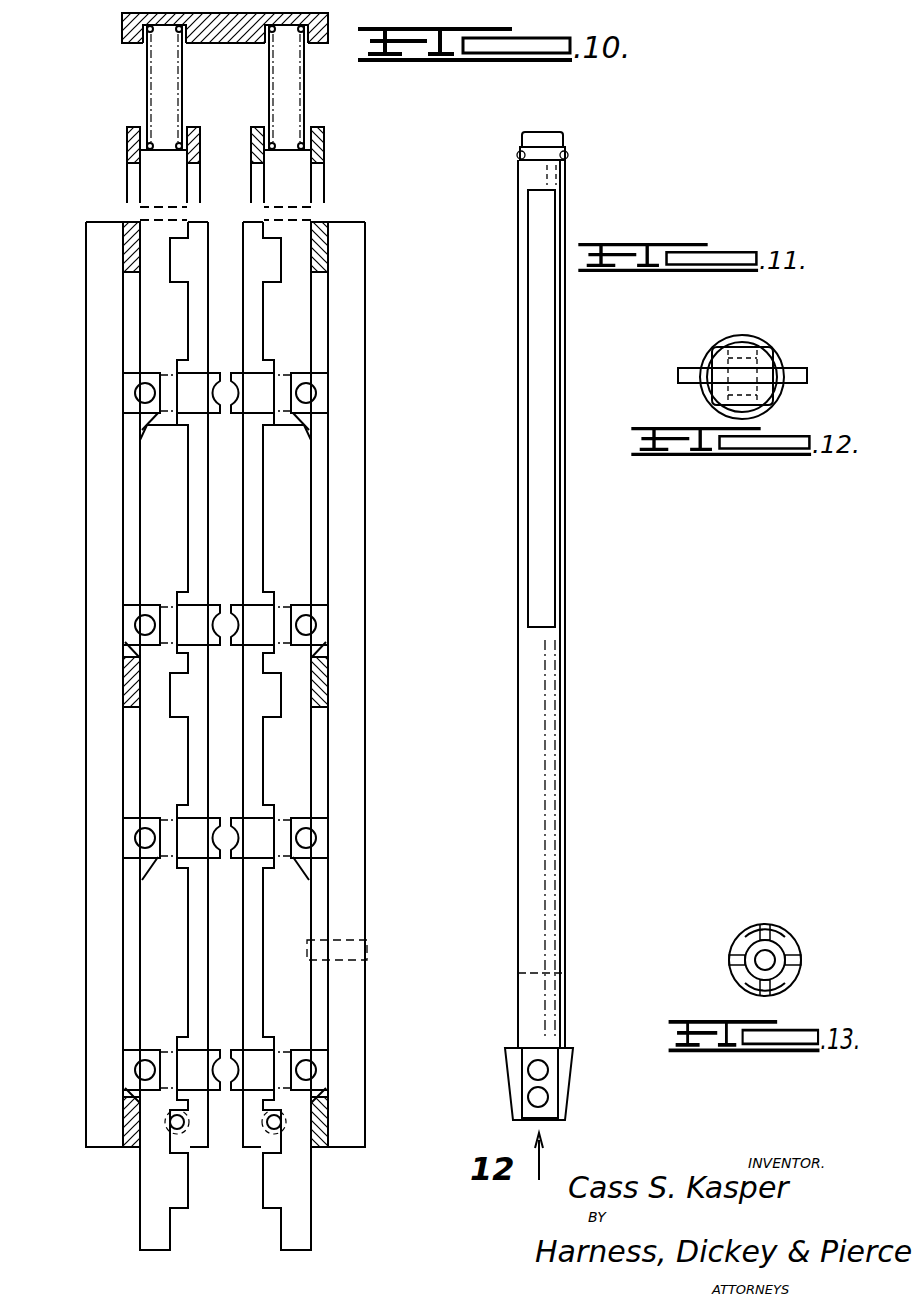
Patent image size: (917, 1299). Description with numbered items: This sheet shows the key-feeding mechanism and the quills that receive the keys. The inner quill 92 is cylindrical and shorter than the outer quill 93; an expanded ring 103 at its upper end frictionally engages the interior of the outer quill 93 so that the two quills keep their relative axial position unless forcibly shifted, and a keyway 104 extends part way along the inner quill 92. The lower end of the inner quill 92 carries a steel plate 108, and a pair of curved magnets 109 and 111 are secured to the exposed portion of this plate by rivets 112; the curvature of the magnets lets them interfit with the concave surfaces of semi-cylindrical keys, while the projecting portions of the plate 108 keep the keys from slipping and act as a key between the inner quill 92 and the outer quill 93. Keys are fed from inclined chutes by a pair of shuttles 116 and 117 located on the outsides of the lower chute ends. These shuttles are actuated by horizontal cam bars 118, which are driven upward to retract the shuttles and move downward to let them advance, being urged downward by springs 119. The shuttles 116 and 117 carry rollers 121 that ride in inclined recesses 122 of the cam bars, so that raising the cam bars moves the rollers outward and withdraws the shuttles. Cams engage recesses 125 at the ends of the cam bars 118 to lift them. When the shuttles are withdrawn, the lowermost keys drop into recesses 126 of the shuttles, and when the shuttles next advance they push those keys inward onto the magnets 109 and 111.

In FIG. 11, the inner quill 92 is at (555, 815).
In FIG. 13, the outer quill 93 is at (800, 948).
In FIG. 11, the expanded ring 103 is at (520, 153).
In FIG. 11, the keyway 104 is at (552, 568).
In FIG. 11, the steel plate 108 is at (565, 1062).
In FIG. 12, the steel plate 108 is at (808, 374).
In FIG. 11, the magnet 109 is at (530, 1083).
In FIG. 12, the magnet 109 is at (762, 358).
In FIG. 12, the magnet 111 is at (777, 403).
In FIG. 11, the rivets 112 is at (545, 1073).
In FIG. 12, the rivets 112 is at (768, 335).
In FIG. 10, the shuttle 116 is at (190, 383).
In FIG. 10, the shuttle 117 is at (262, 380).
In FIG. 10, the cam bars 118 is at (150, 490).
In FIG. 10, the springs 119 is at (302, 146).
In FIG. 10, the rollers 121 is at (318, 836).
In FIG. 10, the recesses 122 is at (300, 428).
In FIG. 10, the recesses 125 is at (268, 1213).
In FIG. 10, the recesses 126 is at (238, 616).